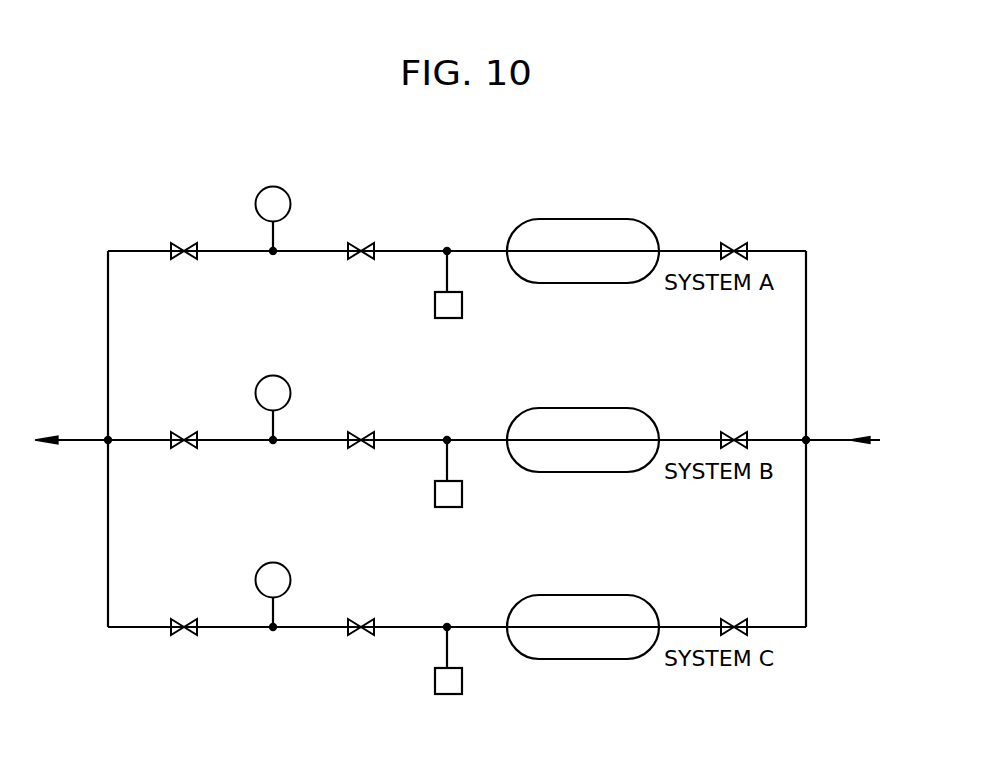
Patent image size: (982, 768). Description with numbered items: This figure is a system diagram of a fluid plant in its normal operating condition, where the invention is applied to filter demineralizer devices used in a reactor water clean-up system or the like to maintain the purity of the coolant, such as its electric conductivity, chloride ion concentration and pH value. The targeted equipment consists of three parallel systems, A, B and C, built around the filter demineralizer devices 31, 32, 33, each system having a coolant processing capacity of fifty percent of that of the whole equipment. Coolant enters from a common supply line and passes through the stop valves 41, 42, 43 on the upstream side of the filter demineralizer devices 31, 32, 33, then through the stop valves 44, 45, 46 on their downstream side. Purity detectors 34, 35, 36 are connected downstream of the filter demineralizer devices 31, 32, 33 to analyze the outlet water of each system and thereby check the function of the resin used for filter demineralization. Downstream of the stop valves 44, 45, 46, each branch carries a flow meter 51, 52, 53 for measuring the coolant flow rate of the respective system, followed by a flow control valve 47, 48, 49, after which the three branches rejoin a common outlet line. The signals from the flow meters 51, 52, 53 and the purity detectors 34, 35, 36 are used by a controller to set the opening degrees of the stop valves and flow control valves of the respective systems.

The filter demineralizer device 31 is at (605, 219).
The filter demineralizer device 32 is at (605, 408).
The filter demineralizer device 33 is at (605, 595).
The purity detector 34 is at (462, 303).
The purity detector 35 is at (462, 492).
The purity detector 36 is at (462, 679).
The stop valve 41 is at (730, 242).
The stop valve 42 is at (730, 431).
The stop valve 43 is at (732, 618).
The stop valve 44 is at (358, 242).
The stop valve 45 is at (358, 431).
The stop valve 46 is at (358, 618).
The flow control valve 47 is at (181, 242).
The flow control valve 48 is at (181, 431).
The flow control valve 49 is at (181, 618).
The flow meter 51 is at (272, 186).
The flow meter 52 is at (272, 375).
The flow meter 53 is at (272, 562).